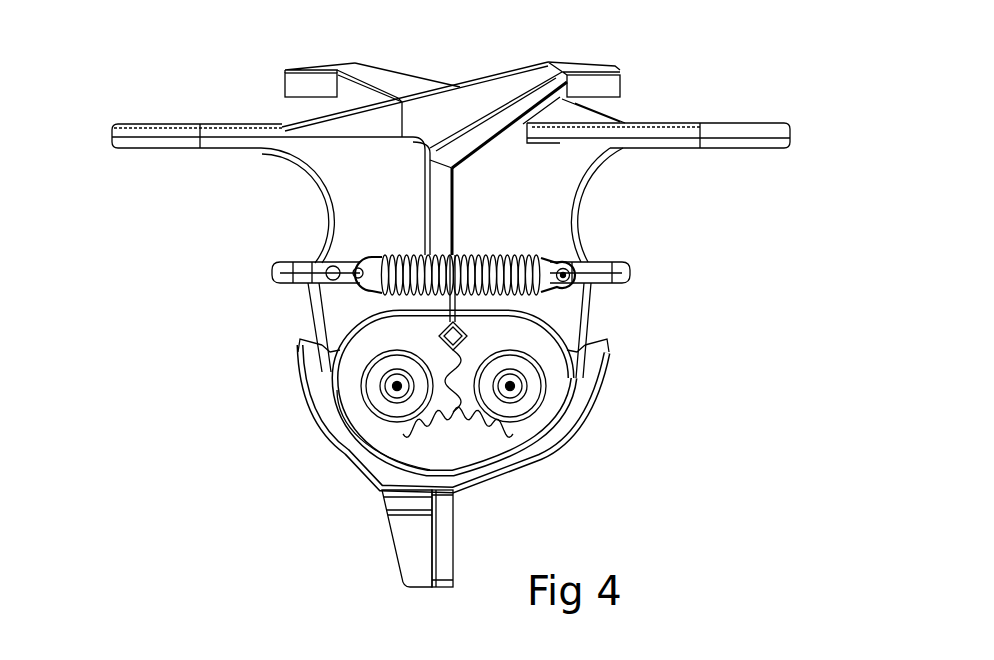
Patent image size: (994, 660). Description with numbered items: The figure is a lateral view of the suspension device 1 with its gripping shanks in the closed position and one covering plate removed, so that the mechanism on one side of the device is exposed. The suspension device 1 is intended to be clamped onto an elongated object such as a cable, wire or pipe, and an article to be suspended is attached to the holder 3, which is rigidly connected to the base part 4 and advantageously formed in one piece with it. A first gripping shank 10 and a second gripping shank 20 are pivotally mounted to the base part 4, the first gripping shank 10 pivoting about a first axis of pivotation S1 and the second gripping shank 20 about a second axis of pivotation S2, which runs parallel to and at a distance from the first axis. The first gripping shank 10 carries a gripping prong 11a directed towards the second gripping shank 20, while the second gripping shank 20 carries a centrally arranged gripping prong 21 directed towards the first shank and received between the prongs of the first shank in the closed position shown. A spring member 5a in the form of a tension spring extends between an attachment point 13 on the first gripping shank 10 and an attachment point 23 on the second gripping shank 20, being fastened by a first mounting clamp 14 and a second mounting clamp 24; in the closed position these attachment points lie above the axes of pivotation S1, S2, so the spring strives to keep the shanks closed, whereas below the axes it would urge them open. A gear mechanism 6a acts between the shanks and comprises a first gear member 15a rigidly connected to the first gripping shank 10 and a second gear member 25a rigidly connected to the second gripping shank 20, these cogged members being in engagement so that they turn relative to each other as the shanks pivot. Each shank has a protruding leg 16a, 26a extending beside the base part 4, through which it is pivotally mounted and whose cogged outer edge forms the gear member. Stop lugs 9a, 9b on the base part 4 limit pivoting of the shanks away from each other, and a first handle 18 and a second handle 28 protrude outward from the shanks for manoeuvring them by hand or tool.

The suspension device 1 is at (690, 63).
The holder 3 is at (445, 570).
The base part 4 is at (560, 445).
The spring member 5a is at (410, 257).
The gear mechanism 6a is at (460, 443).
The stop lug 9a is at (305, 343).
The stop lug 9b is at (597, 343).
The first gripping shank 10 is at (267, 162).
The gripping prong 11a is at (590, 90).
The attachment point 13 is at (357, 268).
The first mounting clamp 14 is at (301, 264).
The first gear member 15a is at (413, 435).
The leg 16a is at (340, 379).
The first handle 18 is at (127, 127).
The second gripping shank 20 is at (618, 165).
The gripping prong 21 is at (321, 80).
The attachment point 23 is at (563, 272).
The second mounting clamp 24 is at (628, 268).
The second gear member 25a is at (498, 437).
The leg 26a is at (557, 396).
The second handle 28 is at (757, 130).
The first axis of pivotation S1 is at (395, 388).
The second axis of pivotation S2 is at (510, 385).